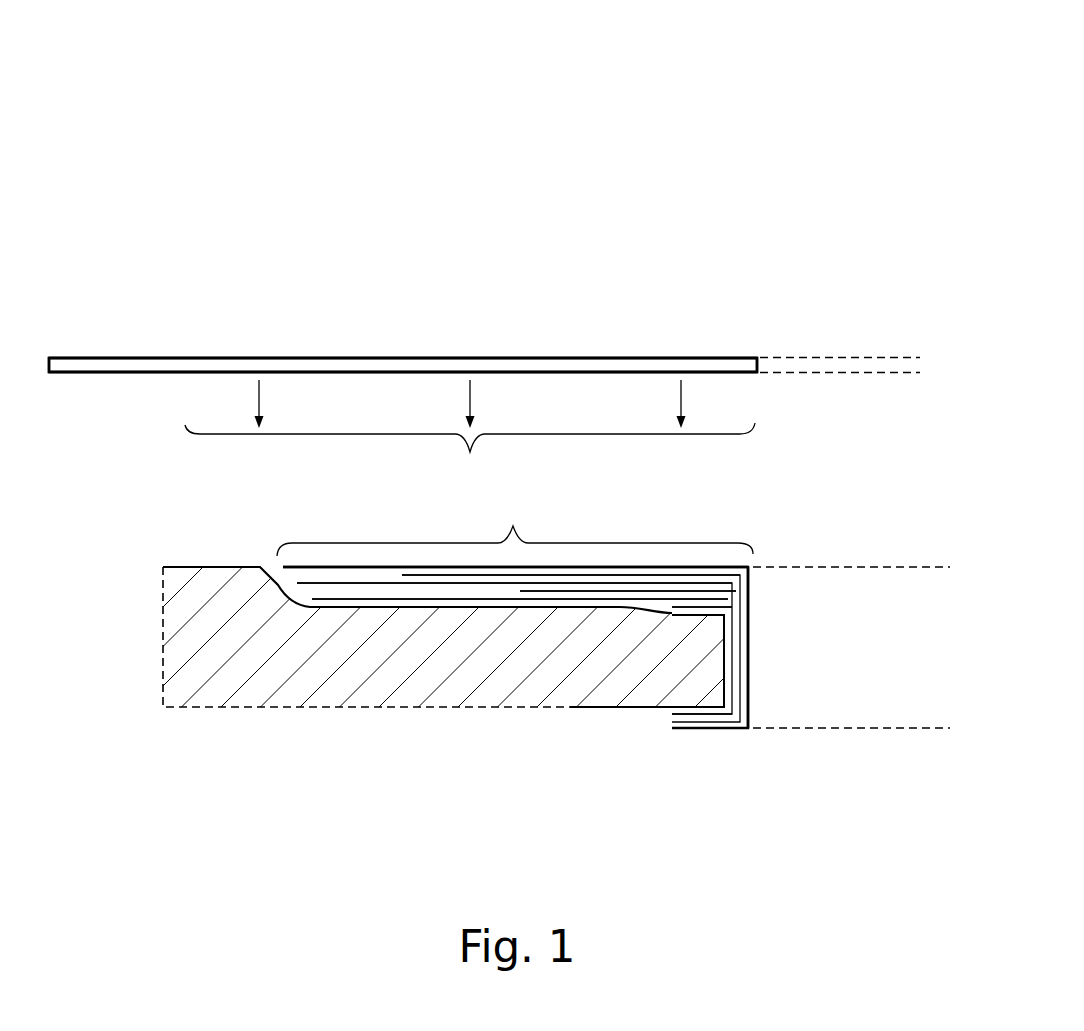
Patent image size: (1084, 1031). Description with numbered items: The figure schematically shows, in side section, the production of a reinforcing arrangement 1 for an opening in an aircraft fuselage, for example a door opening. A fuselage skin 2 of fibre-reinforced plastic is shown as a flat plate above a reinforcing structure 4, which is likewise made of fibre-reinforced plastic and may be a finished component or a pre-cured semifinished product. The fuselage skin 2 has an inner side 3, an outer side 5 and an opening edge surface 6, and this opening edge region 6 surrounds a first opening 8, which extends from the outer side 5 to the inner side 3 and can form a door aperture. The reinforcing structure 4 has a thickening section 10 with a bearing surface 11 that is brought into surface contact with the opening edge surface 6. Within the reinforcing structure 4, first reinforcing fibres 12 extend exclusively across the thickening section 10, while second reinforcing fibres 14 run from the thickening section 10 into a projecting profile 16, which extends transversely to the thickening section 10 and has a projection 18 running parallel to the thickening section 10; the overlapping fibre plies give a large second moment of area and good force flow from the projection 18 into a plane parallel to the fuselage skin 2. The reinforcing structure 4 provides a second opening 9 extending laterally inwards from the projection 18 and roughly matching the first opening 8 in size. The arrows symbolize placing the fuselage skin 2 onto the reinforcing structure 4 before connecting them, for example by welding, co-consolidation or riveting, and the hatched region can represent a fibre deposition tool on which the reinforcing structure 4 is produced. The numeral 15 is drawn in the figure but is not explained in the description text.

The reinforcing arrangement 1 is at (497, 135).
The fuselage skin 2 is at (162, 358).
The inner side 3 is at (108, 413).
The reinforcing structure 4 is at (752, 616).
The outer side 5 is at (648, 343).
The opening edge surface 6 is at (470, 434).
The first opening 8 is at (822, 357).
The second opening 9 is at (877, 600).
The thickening section 10 is at (515, 524).
The bearing surface 11 is at (615, 562).
The first reinforcing fibres 12 is at (317, 605).
The second reinforcing fibres 14 is at (457, 600).
The inner layer end 15 is at (698, 625).
The projecting profile 16 is at (745, 665).
The projection 18 is at (708, 679).